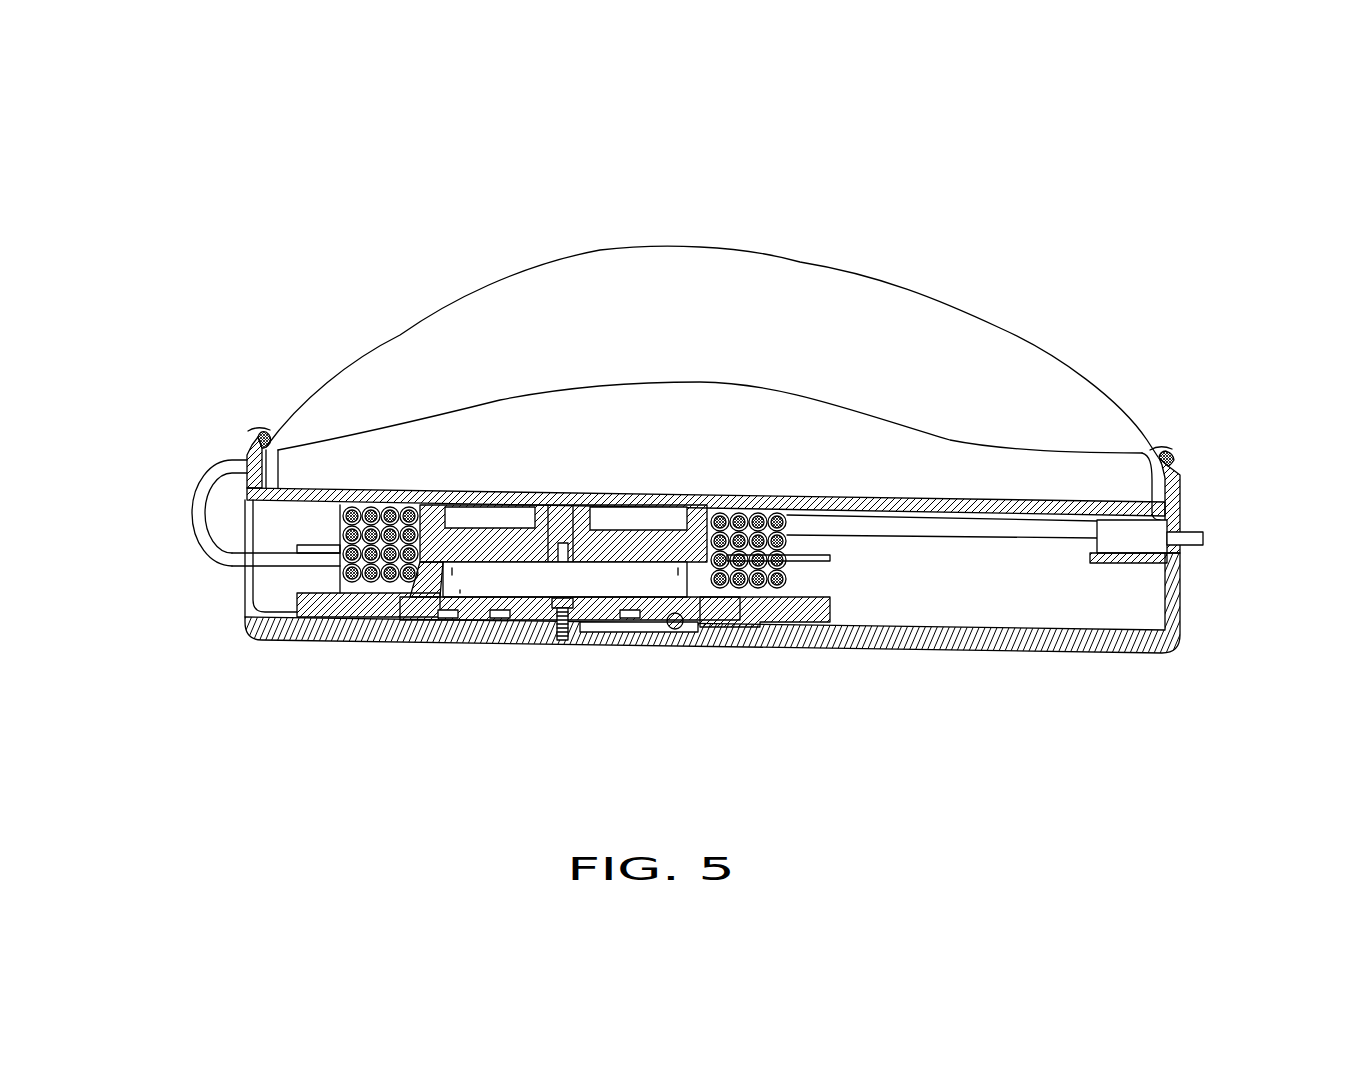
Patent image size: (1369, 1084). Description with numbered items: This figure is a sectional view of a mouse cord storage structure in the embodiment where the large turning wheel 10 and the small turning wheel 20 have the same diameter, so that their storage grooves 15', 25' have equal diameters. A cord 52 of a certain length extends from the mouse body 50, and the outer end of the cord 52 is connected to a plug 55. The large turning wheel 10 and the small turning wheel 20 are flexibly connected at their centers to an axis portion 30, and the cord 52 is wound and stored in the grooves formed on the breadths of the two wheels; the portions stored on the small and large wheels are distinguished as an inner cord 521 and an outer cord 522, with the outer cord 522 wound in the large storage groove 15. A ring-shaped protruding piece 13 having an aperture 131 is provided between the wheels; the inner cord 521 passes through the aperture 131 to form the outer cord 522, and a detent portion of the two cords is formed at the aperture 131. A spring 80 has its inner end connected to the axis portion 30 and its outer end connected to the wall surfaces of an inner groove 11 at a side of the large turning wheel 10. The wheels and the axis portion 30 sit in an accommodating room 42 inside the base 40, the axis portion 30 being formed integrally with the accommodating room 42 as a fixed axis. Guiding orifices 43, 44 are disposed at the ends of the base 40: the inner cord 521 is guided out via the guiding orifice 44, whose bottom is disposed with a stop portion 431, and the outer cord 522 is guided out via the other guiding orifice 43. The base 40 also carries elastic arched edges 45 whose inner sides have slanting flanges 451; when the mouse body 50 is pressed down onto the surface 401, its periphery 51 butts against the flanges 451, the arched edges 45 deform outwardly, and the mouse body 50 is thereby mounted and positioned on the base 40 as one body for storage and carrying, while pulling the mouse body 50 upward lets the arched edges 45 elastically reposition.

The large turning wheel 10 is at (402, 578).
The inner groove 11 is at (591, 462).
The ring-shaped protruding piece 13 is at (300, 548).
The aperture 131 is at (763, 600).
The large storage groove 15 is at (320, 654).
The storage groove 15' is at (849, 646).
The small turning wheel 20 is at (553, 507).
The storage groove 25' is at (377, 408).
The axis portion 30 is at (563, 523).
The base 40 is at (692, 534).
The surface 401 is at (385, 487).
The accommodating room 42 is at (863, 612).
The guiding orifice 43 is at (248, 576).
The stop portion 431 is at (1097, 556).
The guiding orifice 44 is at (1175, 550).
The arched edge 45 is at (753, 406).
The slanting flange 451 is at (283, 437).
The mouse body 50 is at (732, 368).
The periphery 51 is at (292, 455).
The cord 52 is at (212, 580).
The inner cord 521 is at (750, 512).
The outer cord 522 is at (278, 578).
The plug 55 is at (1185, 535).
The spring 80 is at (508, 583).